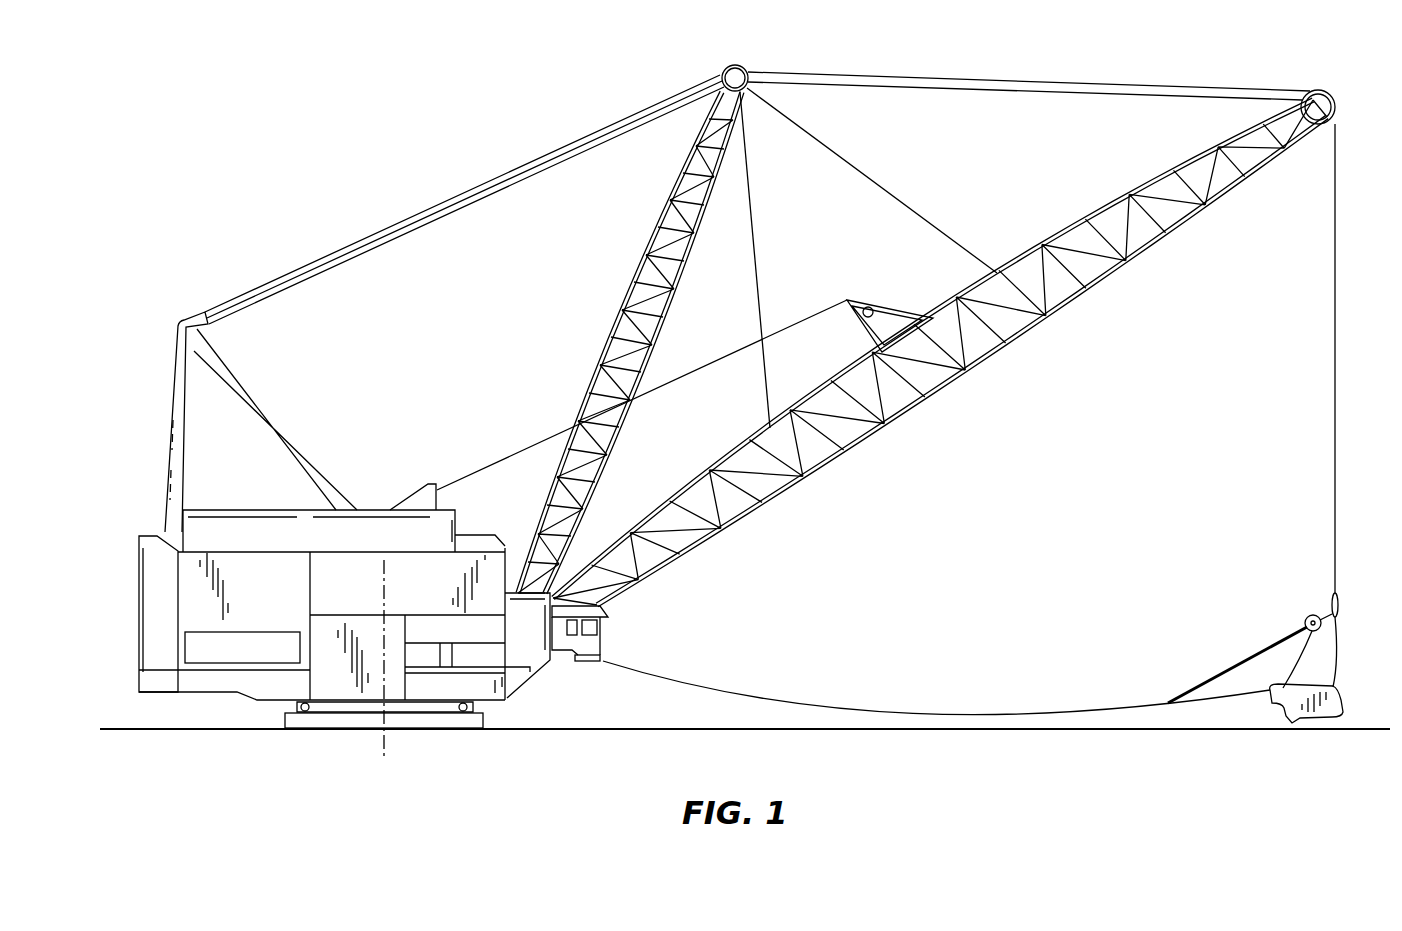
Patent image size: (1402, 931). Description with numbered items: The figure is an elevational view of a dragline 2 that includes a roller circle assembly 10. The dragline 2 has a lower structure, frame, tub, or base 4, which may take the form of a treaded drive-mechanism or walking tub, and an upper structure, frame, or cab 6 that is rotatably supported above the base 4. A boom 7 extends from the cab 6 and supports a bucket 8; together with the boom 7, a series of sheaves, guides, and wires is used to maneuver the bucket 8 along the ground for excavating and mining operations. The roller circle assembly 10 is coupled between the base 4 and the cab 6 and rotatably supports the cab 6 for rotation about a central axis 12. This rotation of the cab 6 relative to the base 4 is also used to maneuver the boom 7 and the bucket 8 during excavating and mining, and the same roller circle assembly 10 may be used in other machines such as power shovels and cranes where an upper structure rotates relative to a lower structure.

The dragline 2 is at (277, 190).
The base 4 is at (322, 717).
The cab 6 is at (154, 577).
The boom 7 is at (1050, 312).
The bucket 8 is at (1342, 703).
The roller circle assembly 10 is at (283, 708).
The central axis 12 is at (386, 603).